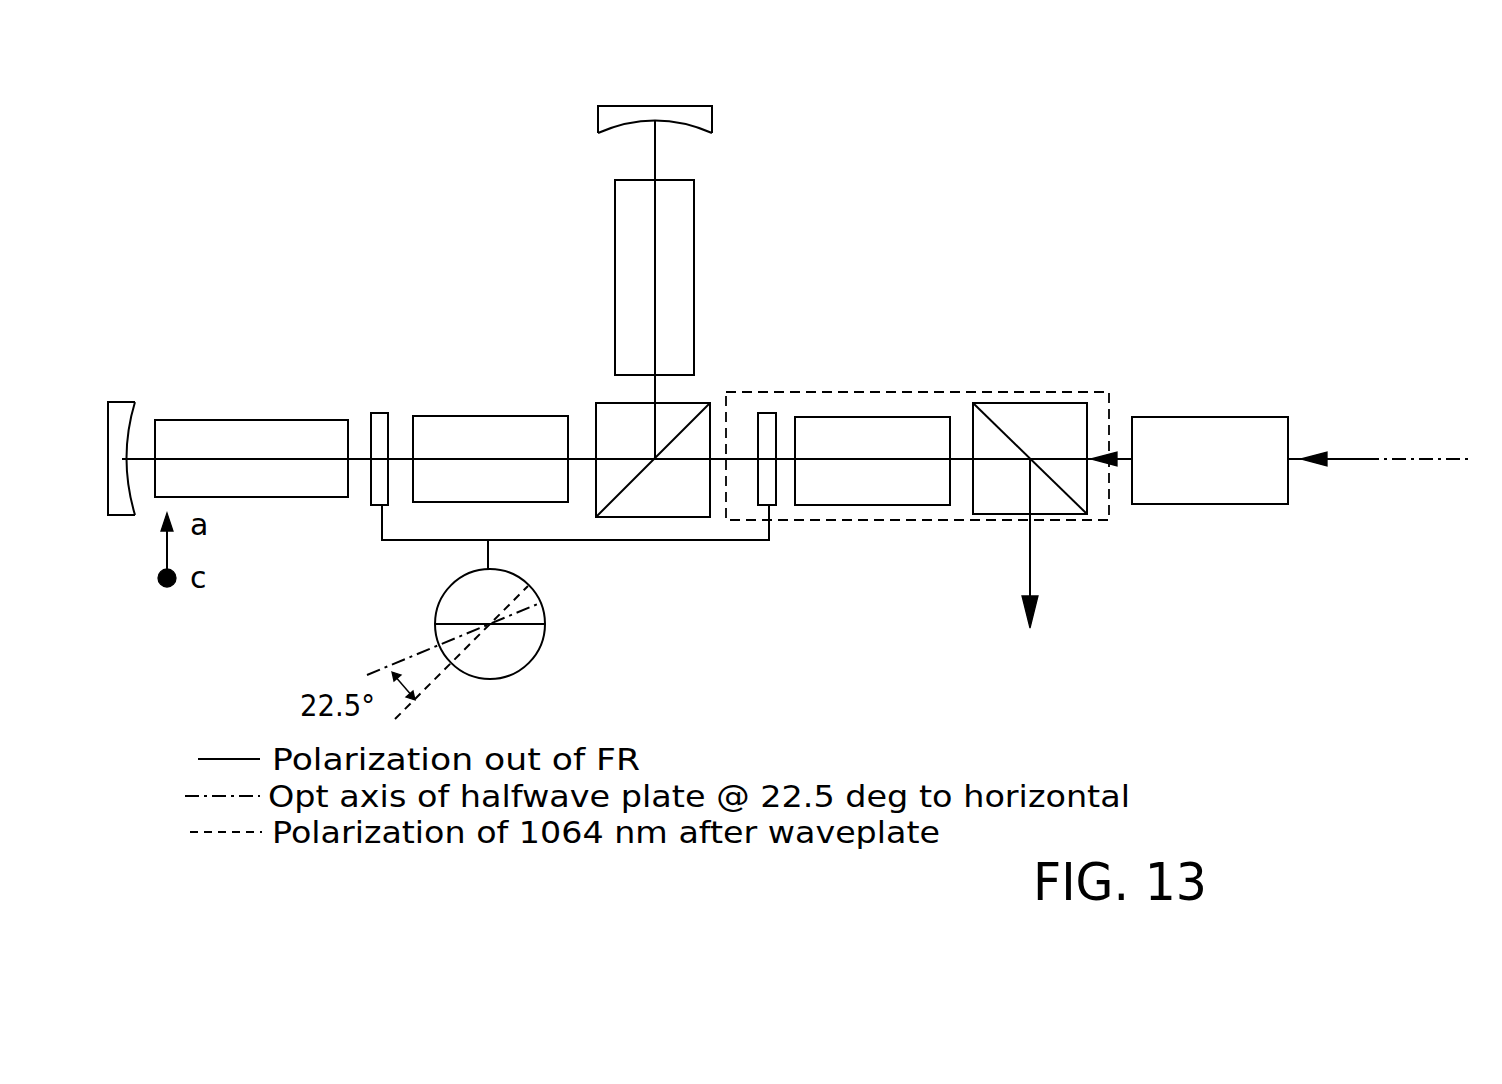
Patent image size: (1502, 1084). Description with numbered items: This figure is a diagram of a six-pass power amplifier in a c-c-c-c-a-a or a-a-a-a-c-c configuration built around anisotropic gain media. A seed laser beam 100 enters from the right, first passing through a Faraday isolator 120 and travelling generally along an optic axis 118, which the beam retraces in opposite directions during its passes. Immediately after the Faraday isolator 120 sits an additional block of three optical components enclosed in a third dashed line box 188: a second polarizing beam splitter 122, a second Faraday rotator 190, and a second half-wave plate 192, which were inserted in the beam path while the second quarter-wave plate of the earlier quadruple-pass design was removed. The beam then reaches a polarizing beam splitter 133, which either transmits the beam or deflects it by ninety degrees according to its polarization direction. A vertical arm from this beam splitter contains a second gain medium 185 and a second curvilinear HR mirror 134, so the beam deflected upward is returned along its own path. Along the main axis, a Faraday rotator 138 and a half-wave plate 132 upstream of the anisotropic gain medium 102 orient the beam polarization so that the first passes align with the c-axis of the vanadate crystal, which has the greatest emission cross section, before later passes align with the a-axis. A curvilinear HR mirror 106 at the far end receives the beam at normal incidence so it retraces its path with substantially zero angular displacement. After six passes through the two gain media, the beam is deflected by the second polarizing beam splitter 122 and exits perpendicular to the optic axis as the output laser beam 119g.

The seed laser beam 100 is at (1352, 462).
The anisotropic gain medium 102 is at (245, 425).
The curvilinear HR mirror 106 is at (128, 420).
The optic axis 118 is at (357, 466).
The output laser beam 119g is at (1033, 567).
The Faraday isolator 120 is at (1215, 425).
The polarizing beam splitter 122 is at (1045, 418).
The half-wave plate 132 is at (372, 420).
The polarizing beam splitter 133 is at (675, 413).
The second curvilinear HR mirror 134 is at (687, 113).
The Faraday rotator 138 is at (463, 425).
The second gain medium 185 is at (694, 228).
The third dashed line box 188 is at (948, 392).
The second Faraday rotator 190 is at (889, 418).
The second half-wave plate 192 is at (770, 422).